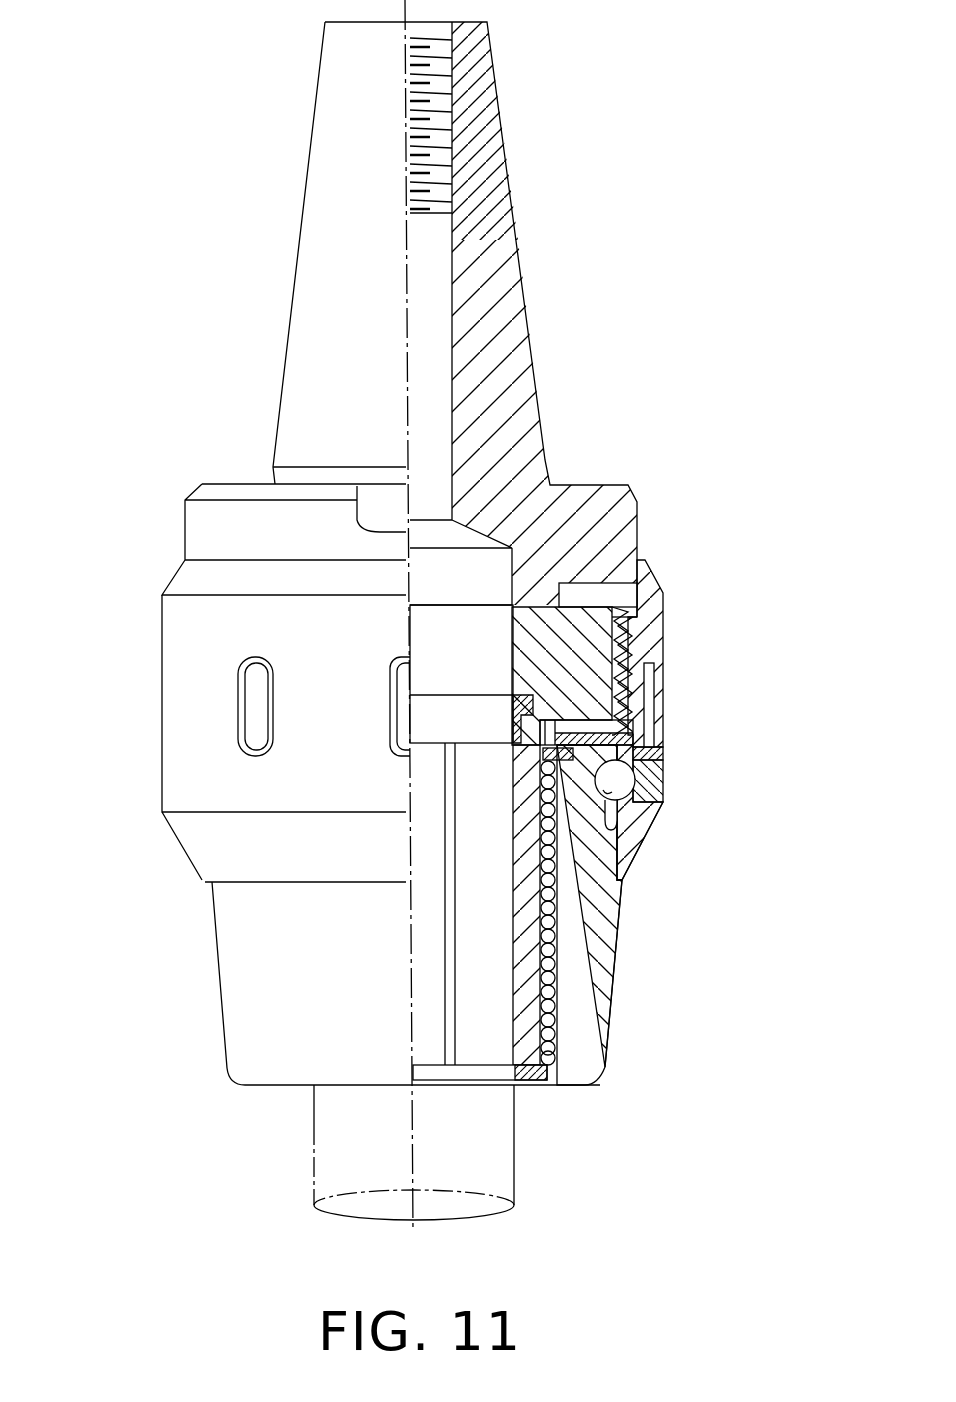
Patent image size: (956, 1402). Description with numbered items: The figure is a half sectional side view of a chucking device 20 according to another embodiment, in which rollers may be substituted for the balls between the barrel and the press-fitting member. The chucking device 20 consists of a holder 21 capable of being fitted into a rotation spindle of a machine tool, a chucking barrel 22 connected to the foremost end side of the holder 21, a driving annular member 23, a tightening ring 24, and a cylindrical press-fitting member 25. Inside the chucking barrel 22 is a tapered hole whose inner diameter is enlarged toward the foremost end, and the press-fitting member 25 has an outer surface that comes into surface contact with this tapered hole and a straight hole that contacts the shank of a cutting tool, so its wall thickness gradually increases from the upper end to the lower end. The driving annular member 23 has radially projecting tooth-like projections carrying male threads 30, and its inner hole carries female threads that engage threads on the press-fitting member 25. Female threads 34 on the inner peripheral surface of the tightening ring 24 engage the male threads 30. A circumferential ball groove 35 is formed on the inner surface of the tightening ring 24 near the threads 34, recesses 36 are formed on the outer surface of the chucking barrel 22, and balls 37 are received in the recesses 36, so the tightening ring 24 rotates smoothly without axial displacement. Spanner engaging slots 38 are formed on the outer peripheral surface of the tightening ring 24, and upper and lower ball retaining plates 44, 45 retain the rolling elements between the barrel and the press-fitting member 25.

The chucking device 20 is at (236, 466).
The holder 21 is at (513, 234).
The chucking barrel 22 is at (612, 972).
The driving annular member 23 is at (533, 660).
The tightening ring 24 is at (655, 593).
The press-fitting member 25 is at (517, 932).
The male threads 30 is at (663, 640).
The female threads 34 is at (612, 630).
The ball groove 35 is at (663, 762).
The recesses 36 is at (627, 842).
The balls 37 is at (632, 788).
The spanner engaging slot 38 is at (258, 740).
The upper ball retaining plate 44 is at (535, 1082).
The lower ball retaining plate 45 is at (523, 753).